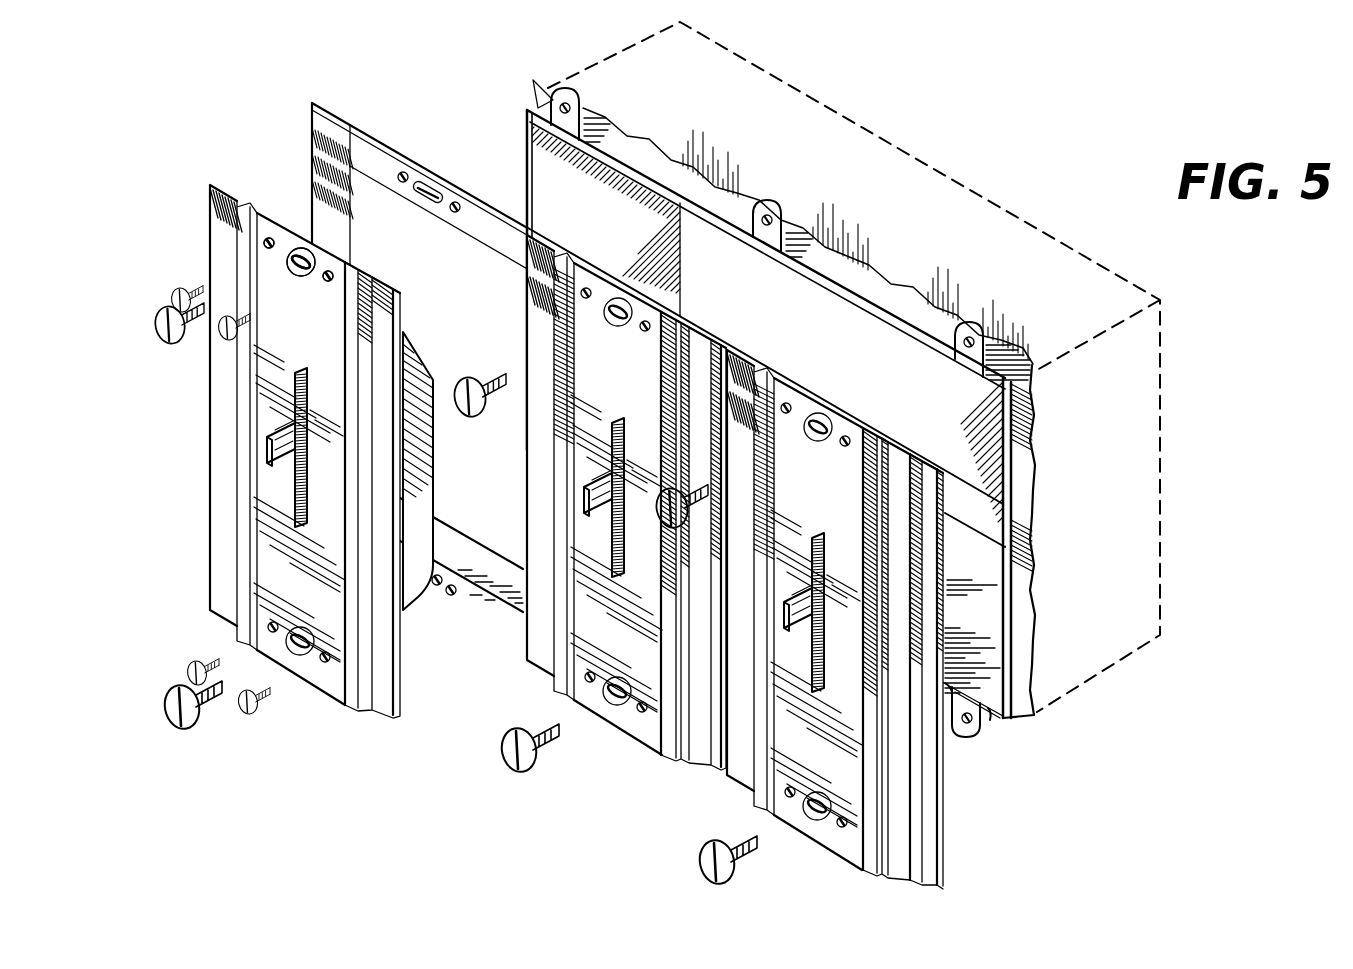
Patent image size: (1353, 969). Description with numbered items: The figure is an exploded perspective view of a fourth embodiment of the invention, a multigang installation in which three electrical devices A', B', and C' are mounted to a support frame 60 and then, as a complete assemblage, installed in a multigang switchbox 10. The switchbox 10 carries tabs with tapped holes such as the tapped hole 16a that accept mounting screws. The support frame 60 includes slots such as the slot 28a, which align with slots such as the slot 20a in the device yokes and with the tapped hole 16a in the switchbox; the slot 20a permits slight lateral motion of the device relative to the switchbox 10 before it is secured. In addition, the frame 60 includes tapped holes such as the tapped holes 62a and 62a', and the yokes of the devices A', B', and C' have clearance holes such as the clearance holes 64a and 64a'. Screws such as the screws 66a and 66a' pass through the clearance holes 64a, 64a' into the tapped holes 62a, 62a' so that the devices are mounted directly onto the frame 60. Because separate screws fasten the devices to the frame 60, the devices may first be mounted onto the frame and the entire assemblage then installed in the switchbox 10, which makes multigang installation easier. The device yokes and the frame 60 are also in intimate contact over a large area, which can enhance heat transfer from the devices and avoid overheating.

The multigang switchbox 10 is at (995, 708).
The tapped hole 16a is at (597, 118).
The slot 20a is at (298, 278).
The slot 28a is at (428, 183).
The support frame 60 is at (326, 134).
The tapped hole 62a is at (402, 143).
The tapped hole 62a' is at (484, 180).
The clearance hole 64a is at (258, 204).
The clearance hole 64a' is at (376, 257).
The screw 66a is at (180, 273).
The screw 66a' is at (202, 359).
The device A' is at (305, 468).
The device B' is at (612, 514).
The device C' is at (819, 620).